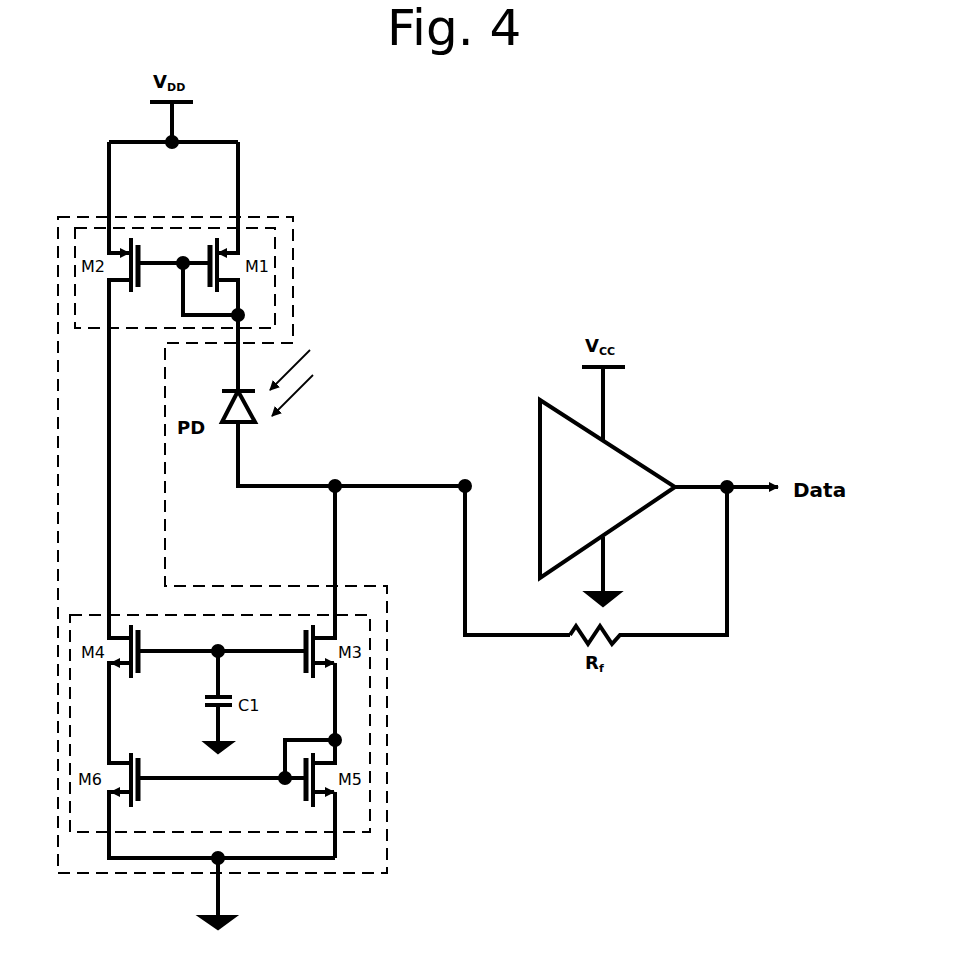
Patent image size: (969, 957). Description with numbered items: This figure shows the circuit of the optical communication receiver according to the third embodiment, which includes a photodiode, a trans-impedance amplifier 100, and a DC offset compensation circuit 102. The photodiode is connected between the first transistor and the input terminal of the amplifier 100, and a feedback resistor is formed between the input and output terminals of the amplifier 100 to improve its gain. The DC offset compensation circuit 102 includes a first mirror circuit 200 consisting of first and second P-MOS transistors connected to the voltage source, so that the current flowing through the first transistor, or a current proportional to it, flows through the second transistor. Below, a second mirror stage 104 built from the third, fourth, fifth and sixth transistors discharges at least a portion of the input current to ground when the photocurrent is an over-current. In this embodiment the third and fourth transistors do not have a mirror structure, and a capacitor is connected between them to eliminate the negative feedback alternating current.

The transimpedance amplifier 100 is at (633, 458).
The DC offset compensation circuit 102 is at (387, 700).
The cascode current mirror 104 is at (370, 747).
The first mirror circuit 200 is at (293, 264).